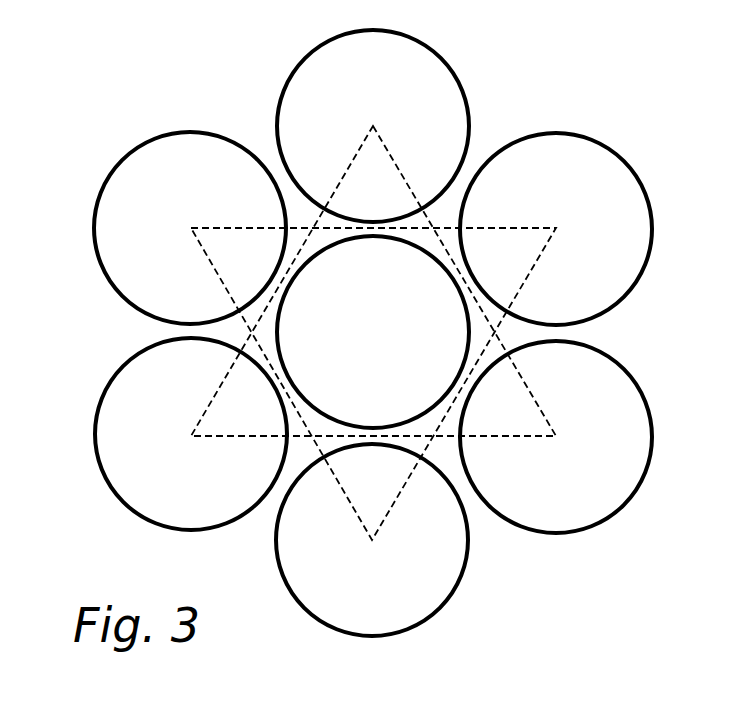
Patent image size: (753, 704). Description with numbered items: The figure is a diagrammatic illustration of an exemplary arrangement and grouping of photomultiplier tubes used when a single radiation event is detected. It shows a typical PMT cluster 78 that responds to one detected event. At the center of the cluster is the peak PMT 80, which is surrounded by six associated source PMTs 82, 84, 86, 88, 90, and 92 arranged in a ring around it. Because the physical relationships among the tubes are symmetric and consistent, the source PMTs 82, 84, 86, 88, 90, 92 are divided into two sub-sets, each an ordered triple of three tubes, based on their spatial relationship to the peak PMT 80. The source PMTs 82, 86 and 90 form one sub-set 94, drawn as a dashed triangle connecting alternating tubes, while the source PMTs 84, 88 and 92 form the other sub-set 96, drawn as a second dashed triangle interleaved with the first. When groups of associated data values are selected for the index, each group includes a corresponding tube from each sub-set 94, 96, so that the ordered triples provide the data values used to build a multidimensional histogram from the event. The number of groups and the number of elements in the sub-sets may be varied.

The PMT cluster 78 is at (88, 118).
The peak PMT 80 is at (470, 342).
The source PMT 82 is at (301, 58).
The source PMT 84 is at (648, 182).
The source PMT 86 is at (635, 493).
The source PMT 88 is at (450, 593).
The source PMT 90 is at (96, 420).
The source PMT 92 is at (95, 233).
The sub-set 94 is at (403, 170).
The sub-set 96 is at (502, 228).